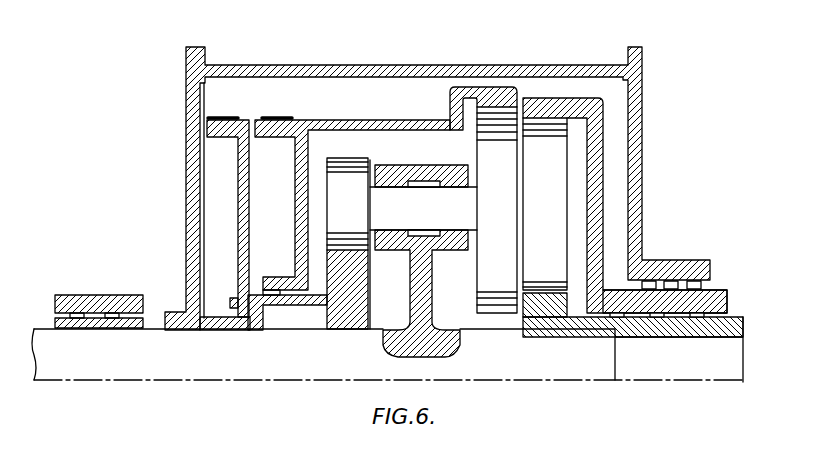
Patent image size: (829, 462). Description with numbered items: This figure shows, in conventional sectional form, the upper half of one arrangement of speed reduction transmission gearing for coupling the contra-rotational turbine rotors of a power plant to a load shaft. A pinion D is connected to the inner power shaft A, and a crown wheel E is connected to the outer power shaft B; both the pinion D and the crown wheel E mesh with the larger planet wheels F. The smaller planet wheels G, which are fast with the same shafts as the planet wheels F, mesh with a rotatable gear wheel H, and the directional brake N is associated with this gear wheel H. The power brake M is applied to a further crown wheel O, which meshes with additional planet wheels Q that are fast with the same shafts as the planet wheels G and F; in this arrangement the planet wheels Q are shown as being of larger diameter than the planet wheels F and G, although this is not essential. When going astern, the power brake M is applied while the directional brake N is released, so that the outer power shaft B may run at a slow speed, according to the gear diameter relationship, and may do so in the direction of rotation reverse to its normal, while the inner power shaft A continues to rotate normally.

The inner power shaft A is at (732, 318).
The outer power shaft B is at (713, 297).
The shaft C is at (528, 369).
The pinion D is at (527, 297).
The crown wheel E is at (625, 174).
The larger planet wheels F is at (550, 223).
The smaller planet wheels G is at (348, 177).
The rotatable gear wheel H is at (365, 287).
The power brake M is at (273, 118).
The directional brake N is at (234, 117).
The crown wheel O is at (481, 174).
The additional planet wheels Q is at (487, 163).